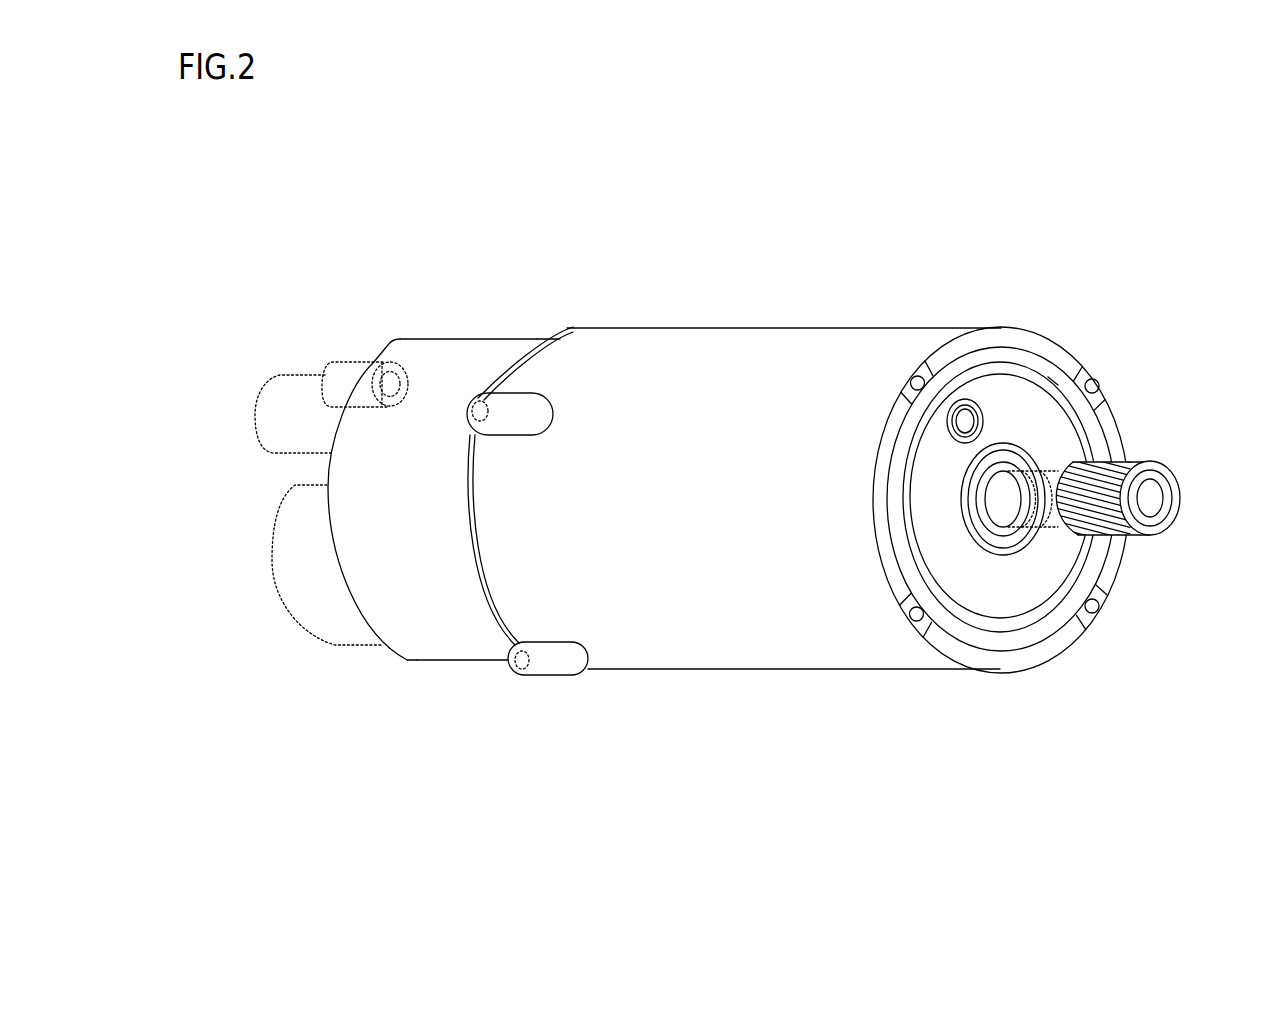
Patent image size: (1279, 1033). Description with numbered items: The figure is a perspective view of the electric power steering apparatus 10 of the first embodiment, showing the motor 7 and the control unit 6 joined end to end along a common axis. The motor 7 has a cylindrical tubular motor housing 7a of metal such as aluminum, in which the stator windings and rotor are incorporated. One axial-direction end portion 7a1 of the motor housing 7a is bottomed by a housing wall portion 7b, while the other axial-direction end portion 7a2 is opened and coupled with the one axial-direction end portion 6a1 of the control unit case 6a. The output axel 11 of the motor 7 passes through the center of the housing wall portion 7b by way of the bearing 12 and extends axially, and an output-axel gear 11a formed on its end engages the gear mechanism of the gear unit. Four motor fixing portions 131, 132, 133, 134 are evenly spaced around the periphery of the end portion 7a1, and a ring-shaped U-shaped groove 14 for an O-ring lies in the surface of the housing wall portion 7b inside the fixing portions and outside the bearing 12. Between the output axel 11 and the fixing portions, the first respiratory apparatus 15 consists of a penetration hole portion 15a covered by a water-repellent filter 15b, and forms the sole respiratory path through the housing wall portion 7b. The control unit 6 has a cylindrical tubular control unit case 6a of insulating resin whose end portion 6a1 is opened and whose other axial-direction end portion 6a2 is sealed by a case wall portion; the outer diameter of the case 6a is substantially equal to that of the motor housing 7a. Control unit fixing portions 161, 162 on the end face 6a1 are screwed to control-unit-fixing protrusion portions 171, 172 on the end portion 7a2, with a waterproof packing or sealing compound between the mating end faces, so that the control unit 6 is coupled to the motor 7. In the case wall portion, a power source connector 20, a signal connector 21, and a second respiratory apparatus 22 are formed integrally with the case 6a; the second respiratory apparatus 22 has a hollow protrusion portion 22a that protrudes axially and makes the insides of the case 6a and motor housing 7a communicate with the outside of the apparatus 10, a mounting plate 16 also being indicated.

The control unit 6 is at (432, 318).
The control unit case 6a is at (402, 625).
The one axial-direction end portion of the control unit case 6a1 is at (488, 603).
The other axial-direction end portion of the control unit case 6a2 is at (352, 607).
The motor 7 is at (747, 324).
The motor housing 7a is at (665, 378).
The one axial-direction end portion of the motor housing 7a1 is at (937, 348).
The other axial-direction end portion of the motor housing 7a2 is at (537, 332).
The housing wall portion 7b is at (999, 605).
The electric power steering apparatus 10 is at (835, 246).
The output axel 11 is at (1066, 466).
The output-axel gear 11a is at (1098, 522).
The bearing 12 is at (1012, 537).
The U-shaped groove 14 is at (1000, 432).
The first respiratory apparatus 15 is at (973, 259).
The penetration hole portion 15a is at (1053, 380).
The filter 15b is at (967, 421).
The mounting plate 16 is at (548, 553).
The control unit fixing portion 161 is at (480, 393).
The control unit fixing portion 162 is at (510, 653).
The control-unit-fixing protrusion portion 171 is at (525, 403).
The control-unit-fixing protrusion portion 172 is at (553, 665).
The power source connector 20 is at (283, 405).
The signal connector 21 is at (298, 595).
The second respiratory apparatus 22 is at (335, 351).
The hollow protrusion portion 22a is at (353, 365).
The motor fixing portion 131 is at (893, 390).
The motor fixing portion 132 is at (915, 625).
The motor fixing portion 133 is at (1097, 623).
The motor fixing portion 134 is at (1107, 396).